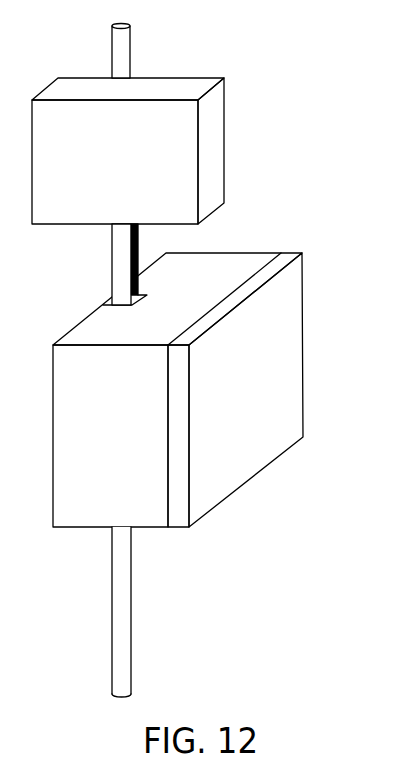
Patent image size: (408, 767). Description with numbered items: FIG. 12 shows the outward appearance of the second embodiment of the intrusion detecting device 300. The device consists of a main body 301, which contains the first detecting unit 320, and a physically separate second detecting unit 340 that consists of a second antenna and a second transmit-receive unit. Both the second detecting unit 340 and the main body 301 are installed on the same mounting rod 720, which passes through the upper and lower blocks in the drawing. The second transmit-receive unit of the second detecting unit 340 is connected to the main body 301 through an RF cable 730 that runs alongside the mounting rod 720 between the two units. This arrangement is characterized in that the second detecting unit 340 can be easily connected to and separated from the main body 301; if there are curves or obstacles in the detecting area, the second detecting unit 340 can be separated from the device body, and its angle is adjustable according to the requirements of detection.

The intrusion detecting device 300 is at (300, 40).
The second detecting unit 340 is at (208, 152).
The first detecting unit 320 is at (212, 413).
The main body 301 is at (144, 517).
The mounting rod 720 is at (124, 290).
The RF cable 730 is at (141, 268).